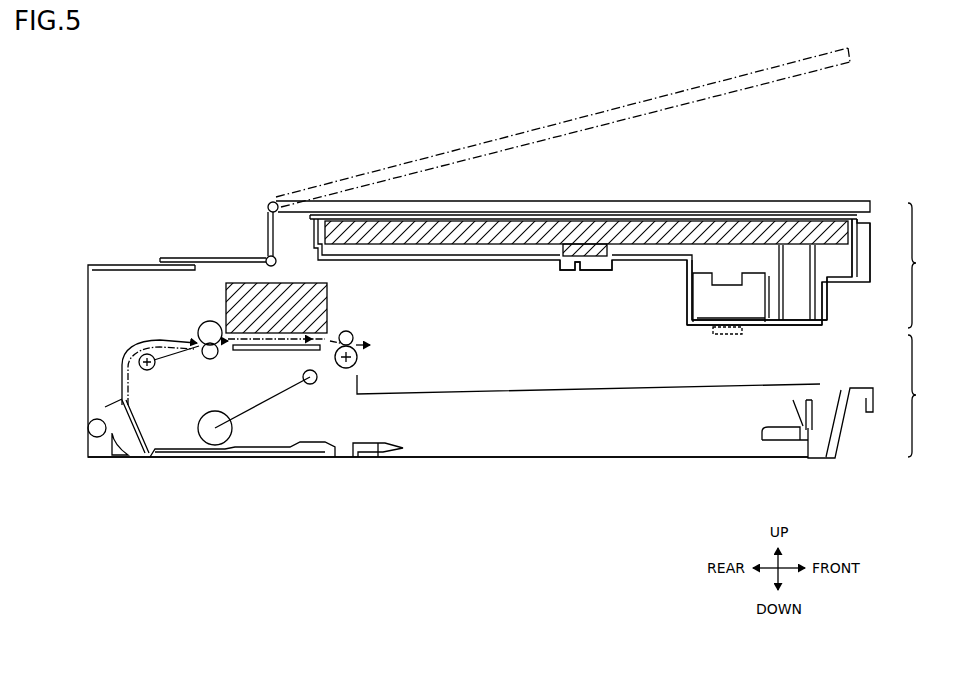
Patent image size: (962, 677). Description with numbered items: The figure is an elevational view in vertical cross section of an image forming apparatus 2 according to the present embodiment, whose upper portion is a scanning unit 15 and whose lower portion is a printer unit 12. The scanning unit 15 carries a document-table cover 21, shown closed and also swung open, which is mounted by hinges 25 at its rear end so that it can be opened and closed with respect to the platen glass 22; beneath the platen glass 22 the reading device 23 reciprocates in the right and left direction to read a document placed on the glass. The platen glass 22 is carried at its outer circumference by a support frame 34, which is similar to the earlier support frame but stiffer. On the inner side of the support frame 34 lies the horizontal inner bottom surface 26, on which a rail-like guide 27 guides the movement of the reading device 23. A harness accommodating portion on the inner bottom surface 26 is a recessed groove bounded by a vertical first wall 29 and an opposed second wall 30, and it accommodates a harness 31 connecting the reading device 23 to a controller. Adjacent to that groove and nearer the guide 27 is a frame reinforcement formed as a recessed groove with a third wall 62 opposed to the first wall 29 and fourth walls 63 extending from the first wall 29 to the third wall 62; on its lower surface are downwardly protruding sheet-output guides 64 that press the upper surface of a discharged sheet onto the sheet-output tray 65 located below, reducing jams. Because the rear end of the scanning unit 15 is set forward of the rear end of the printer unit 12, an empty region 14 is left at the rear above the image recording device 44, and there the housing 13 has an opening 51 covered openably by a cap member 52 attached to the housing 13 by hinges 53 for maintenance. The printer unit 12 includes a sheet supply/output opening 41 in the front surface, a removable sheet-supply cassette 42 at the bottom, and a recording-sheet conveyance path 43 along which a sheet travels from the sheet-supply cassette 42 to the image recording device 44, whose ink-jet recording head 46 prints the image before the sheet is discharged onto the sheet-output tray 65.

The image forming apparatus 2 is at (150, 93).
The printer unit 12 is at (513, 396).
The housing 13 is at (88, 347).
The empty region 14 is at (201, 224).
The scanning unit 15 is at (625, 265).
The document-table cover 21 is at (479, 149).
The platen glass 22 is at (572, 215).
The reading device 23 is at (457, 245).
The hinges 25 is at (268, 204).
The inner bottom surface 26 is at (832, 300).
The guide 27 is at (580, 269).
The first wall 29 is at (780, 324).
The second wall 30 is at (829, 315).
The harness 31 is at (797, 324).
The support frame 34 is at (862, 255).
The sheet supply/output opening 41 is at (860, 366).
The sheet-supply cassette 42 is at (486, 459).
The recording-sheet conveyance path 43 is at (106, 381).
The image recording device 44 is at (254, 354).
The ink-jet recording head 46 is at (280, 336).
The opening 51 is at (221, 267).
The cap member 52 is at (226, 258).
The hinges 53 is at (277, 258).
The third wall 62 is at (688, 308).
The fourth walls 63 is at (703, 325).
The sheet-output guides 64 is at (727, 336).
The sheet-output tray 65 is at (480, 393).